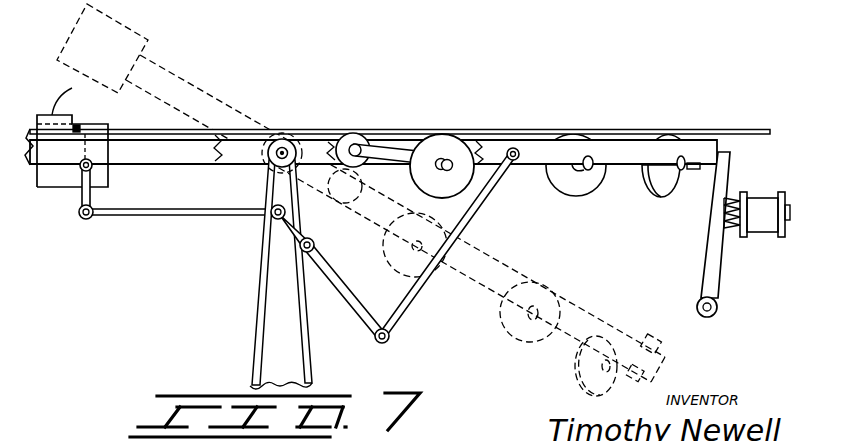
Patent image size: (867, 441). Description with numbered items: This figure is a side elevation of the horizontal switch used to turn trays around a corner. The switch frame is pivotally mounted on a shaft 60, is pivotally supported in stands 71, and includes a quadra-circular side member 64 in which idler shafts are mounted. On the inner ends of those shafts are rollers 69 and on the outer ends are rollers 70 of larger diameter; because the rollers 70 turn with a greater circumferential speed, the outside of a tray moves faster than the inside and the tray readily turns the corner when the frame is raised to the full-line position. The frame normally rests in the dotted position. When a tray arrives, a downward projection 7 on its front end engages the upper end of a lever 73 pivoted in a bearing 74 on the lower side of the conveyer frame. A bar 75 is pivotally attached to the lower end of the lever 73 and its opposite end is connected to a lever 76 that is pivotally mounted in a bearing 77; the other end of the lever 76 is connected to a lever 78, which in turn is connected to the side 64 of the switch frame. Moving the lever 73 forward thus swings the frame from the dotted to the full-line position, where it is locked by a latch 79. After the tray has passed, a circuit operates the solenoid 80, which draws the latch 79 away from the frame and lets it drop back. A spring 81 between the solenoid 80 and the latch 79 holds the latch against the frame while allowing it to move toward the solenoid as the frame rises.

The projection 7 is at (78, 128).
The shaft 60 is at (287, 141).
The quadra-circular member 64 is at (632, 152).
The roller 69 is at (368, 130).
The roller 70 is at (460, 143).
The stand 71 is at (257, 298).
The lever 73 is at (92, 148).
The bearing 74 is at (78, 187).
The bar 75 is at (128, 217).
The lever 76 is at (348, 297).
The bearing 77 is at (302, 250).
The lever 78 is at (420, 290).
The latch 79 is at (710, 253).
The solenoid 80 is at (785, 176).
The spring 81 is at (730, 232).